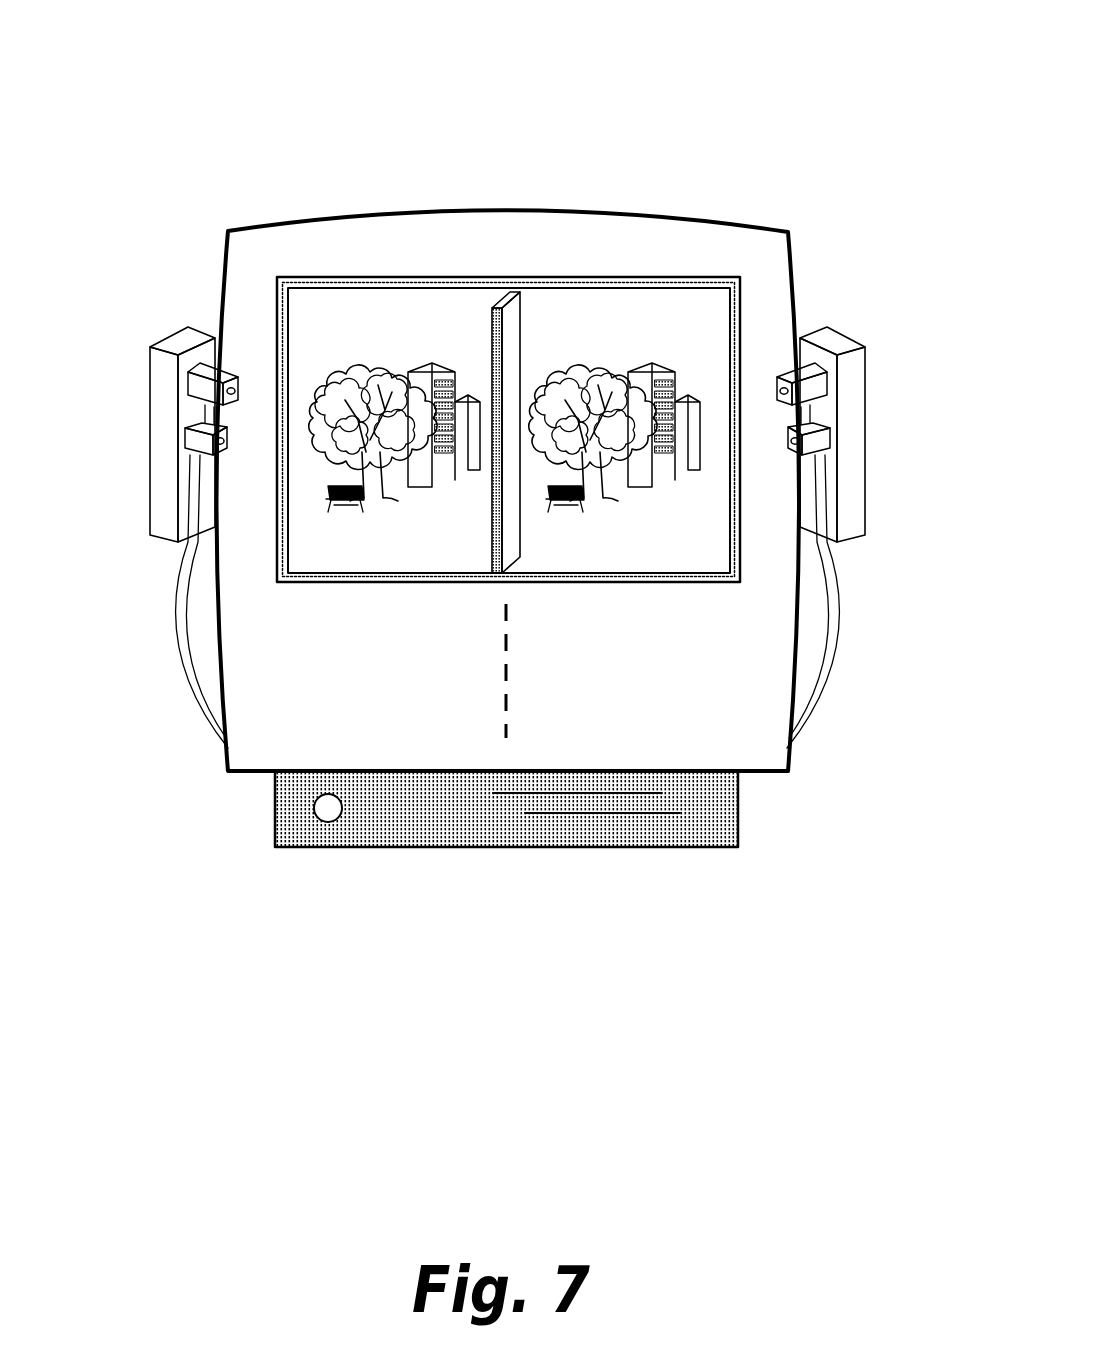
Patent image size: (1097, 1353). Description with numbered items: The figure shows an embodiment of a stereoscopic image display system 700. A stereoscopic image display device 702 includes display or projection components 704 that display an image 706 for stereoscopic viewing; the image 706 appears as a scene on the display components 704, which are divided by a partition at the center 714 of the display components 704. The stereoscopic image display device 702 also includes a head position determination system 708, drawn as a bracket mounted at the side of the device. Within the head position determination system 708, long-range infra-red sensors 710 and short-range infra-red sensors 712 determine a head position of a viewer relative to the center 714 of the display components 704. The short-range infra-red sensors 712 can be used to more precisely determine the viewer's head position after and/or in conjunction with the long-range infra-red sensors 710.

The stereoscopic image display system 700 is at (705, 88).
The stereoscopic image display device 702 is at (720, 218).
The display components 704 is at (488, 288).
The image 706 is at (372, 358).
The head position determination system 708 is at (160, 312).
The long-range infra-red sensors 710 is at (205, 392).
The short-range infra-red sensors 712 is at (203, 447).
The center 714 is at (507, 685).